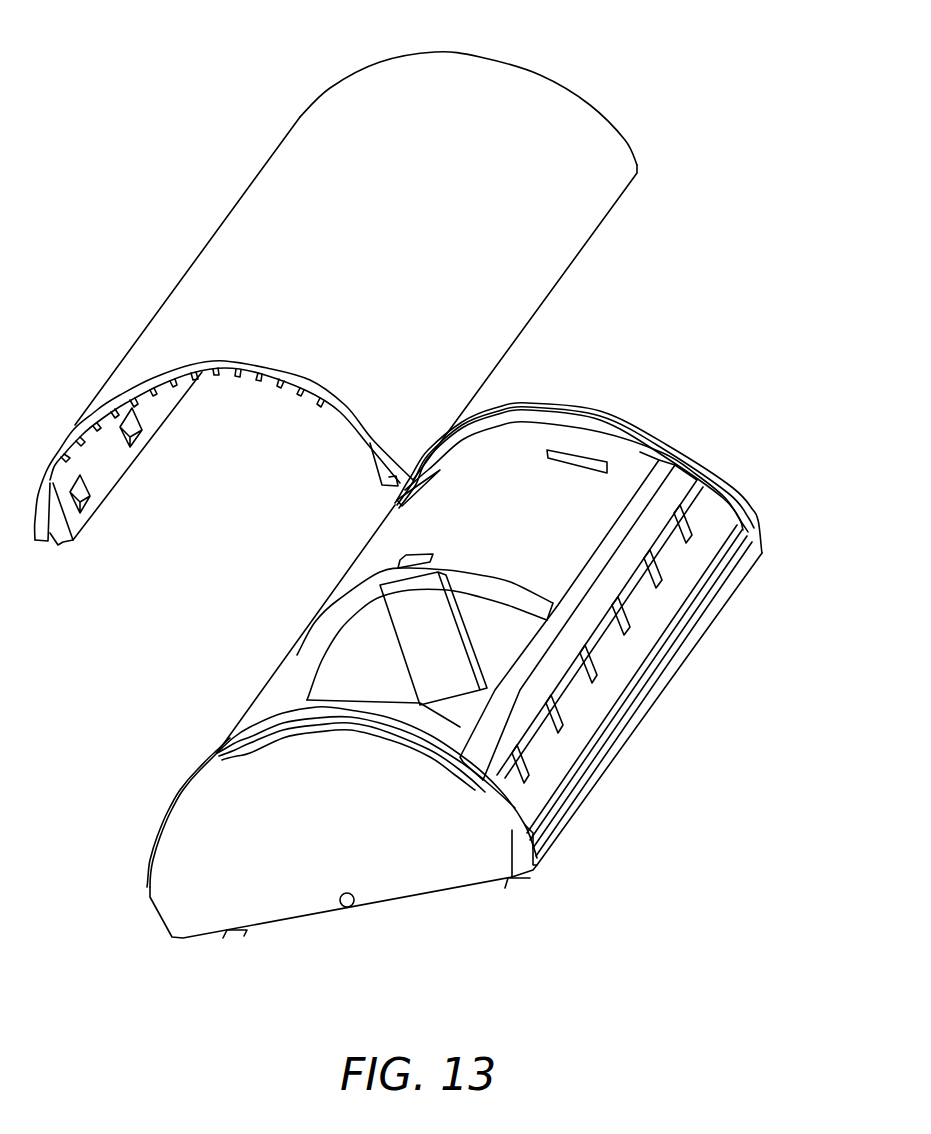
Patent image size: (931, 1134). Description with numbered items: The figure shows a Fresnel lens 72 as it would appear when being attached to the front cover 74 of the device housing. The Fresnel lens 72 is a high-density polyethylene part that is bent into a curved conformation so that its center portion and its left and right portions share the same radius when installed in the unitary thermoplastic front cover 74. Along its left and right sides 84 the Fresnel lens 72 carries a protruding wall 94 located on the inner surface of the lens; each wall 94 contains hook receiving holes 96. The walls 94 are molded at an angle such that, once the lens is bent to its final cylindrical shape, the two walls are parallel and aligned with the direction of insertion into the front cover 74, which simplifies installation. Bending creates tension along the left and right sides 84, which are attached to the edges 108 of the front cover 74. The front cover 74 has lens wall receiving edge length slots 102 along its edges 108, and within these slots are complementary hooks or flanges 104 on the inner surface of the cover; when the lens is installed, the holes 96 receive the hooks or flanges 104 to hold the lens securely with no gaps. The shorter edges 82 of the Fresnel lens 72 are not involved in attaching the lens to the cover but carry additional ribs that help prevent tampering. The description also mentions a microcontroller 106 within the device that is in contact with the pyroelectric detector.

The Fresnel lens 72 is at (355, 140).
The front cover 74 is at (175, 828).
The shorter edges 82 is at (482, 57).
The left and right sides 84 is at (583, 251).
The walls 94 is at (105, 505).
The hook receiving holes 96 is at (143, 440).
The lens wall receiving edge length slots 102 is at (677, 553).
The hooks or flanges 104 is at (653, 595).
The microcontroller 106 is at (520, 657).
The edges 108 is at (543, 818).